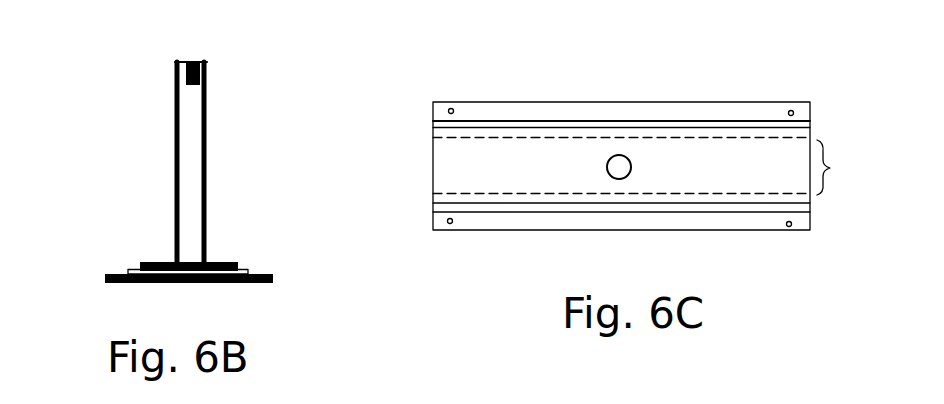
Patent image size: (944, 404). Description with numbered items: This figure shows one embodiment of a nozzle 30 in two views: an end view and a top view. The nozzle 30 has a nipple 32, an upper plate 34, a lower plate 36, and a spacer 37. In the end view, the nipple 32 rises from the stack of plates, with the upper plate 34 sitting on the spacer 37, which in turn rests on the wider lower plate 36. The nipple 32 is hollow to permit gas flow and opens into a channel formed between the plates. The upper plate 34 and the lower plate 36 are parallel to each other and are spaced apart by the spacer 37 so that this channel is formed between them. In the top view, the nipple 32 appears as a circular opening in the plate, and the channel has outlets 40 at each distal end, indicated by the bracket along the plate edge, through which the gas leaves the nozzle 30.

In FIG. 6B, the nozzle 30 is at (107, 102).
In FIG. 6B, the nipple 32 is at (208, 125).
In FIG. 6C, the nipple 32 is at (622, 163).
In FIG. 6B, the upper plate 34 is at (218, 258).
In FIG. 6C, the upper plate 34 is at (478, 135).
In FIG. 6B, the lower plate 36 is at (260, 284).
In FIG. 6C, the lower plate 36 is at (588, 112).
In FIG. 6B, the spacer 37 is at (250, 267).
In FIG. 6C, the spacer 37 is at (522, 128).
In FIG. 6C, the outlets 40 is at (837, 167).